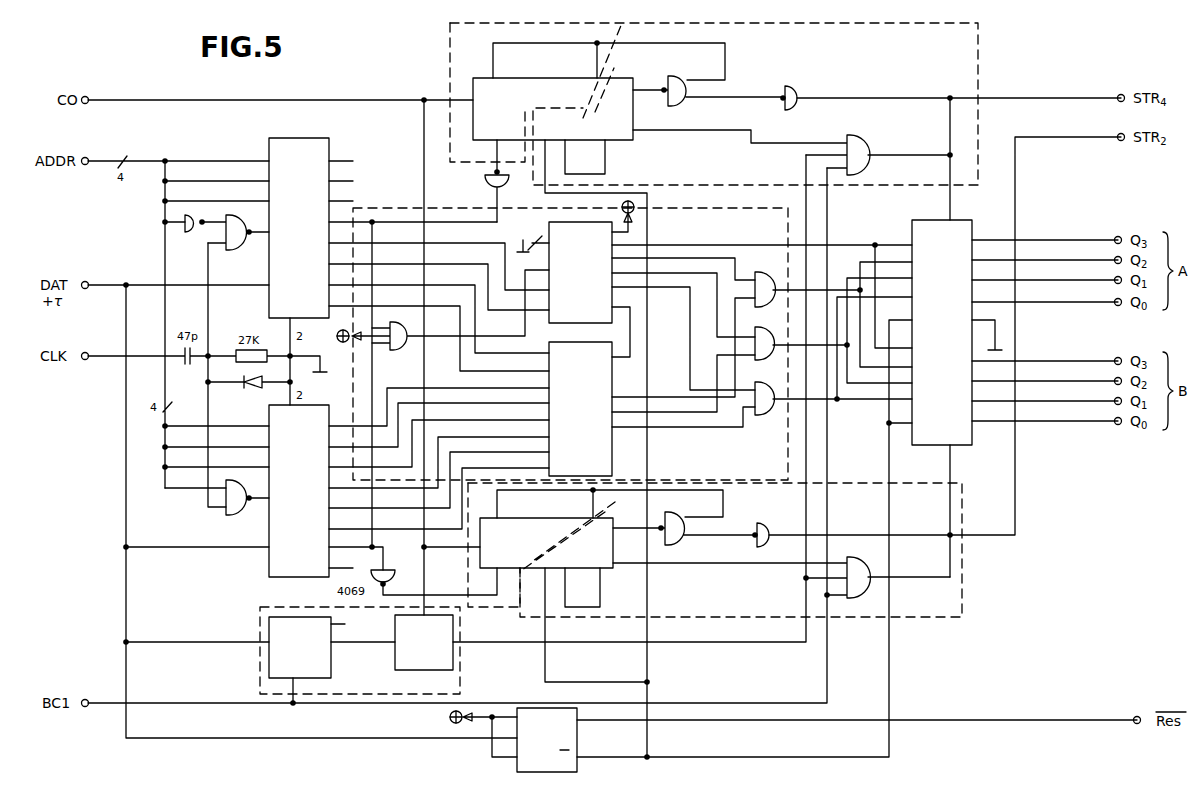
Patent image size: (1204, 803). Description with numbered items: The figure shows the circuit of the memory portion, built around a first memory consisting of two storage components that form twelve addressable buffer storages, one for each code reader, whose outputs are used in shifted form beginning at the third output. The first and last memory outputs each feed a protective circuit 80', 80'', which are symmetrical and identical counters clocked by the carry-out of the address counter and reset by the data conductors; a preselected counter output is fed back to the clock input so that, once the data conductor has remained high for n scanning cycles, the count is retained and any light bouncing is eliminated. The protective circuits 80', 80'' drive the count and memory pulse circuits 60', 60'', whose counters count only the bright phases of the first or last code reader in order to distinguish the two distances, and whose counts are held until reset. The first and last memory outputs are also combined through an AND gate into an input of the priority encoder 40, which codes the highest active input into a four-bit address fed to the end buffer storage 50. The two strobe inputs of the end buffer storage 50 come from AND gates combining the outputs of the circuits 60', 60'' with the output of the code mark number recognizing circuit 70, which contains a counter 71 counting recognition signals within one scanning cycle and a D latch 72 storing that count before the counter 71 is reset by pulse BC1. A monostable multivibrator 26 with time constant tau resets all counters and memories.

The priority encoder 40 is at (775, 226).
The end buffer storage 50 is at (930, 438).
The count and memory pulse circuit 60' is at (715, 122).
The count and memory pulse circuit 60'' is at (726, 563).
The code mark number recognizing circuit 70 is at (280, 687).
The counter 71 is at (313, 668).
The latch memory 72 is at (440, 659).
The protective circuit 80' is at (515, 122).
The protective circuit 80'' is at (528, 563).
The monostable multivibrator 26 is at (567, 737).